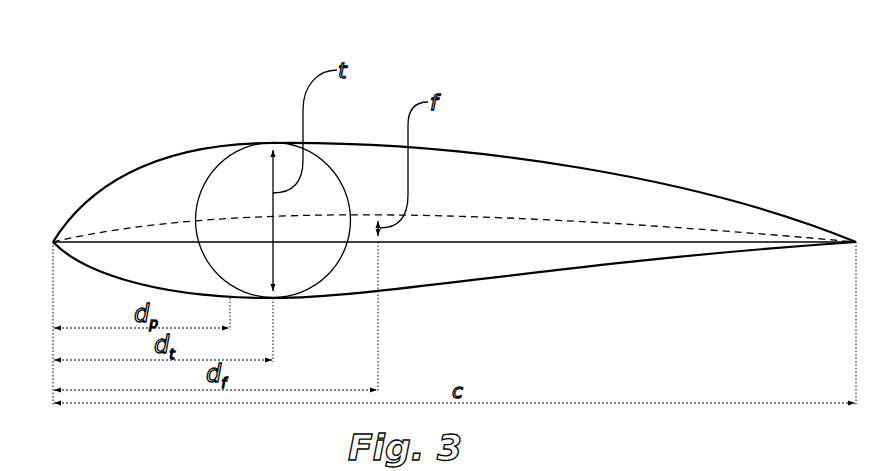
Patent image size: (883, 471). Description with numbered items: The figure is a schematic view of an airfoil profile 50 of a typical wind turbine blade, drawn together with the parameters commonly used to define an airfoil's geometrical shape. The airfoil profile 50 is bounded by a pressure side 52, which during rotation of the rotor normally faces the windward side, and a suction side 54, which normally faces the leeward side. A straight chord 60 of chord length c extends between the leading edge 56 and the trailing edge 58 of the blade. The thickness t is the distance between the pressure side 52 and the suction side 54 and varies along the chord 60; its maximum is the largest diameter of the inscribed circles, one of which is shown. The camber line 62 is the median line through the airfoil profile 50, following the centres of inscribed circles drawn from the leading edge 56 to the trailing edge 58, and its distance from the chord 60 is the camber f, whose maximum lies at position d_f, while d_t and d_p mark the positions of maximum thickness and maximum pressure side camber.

The airfoil profile 50 is at (438, 167).
The pressure side 52 is at (613, 266).
The suction side 54 is at (553, 161).
The leading edge 56 is at (53, 243).
The trailing edge 58 is at (856, 240).
The chord 60 is at (652, 242).
The camber line 62 is at (445, 213).